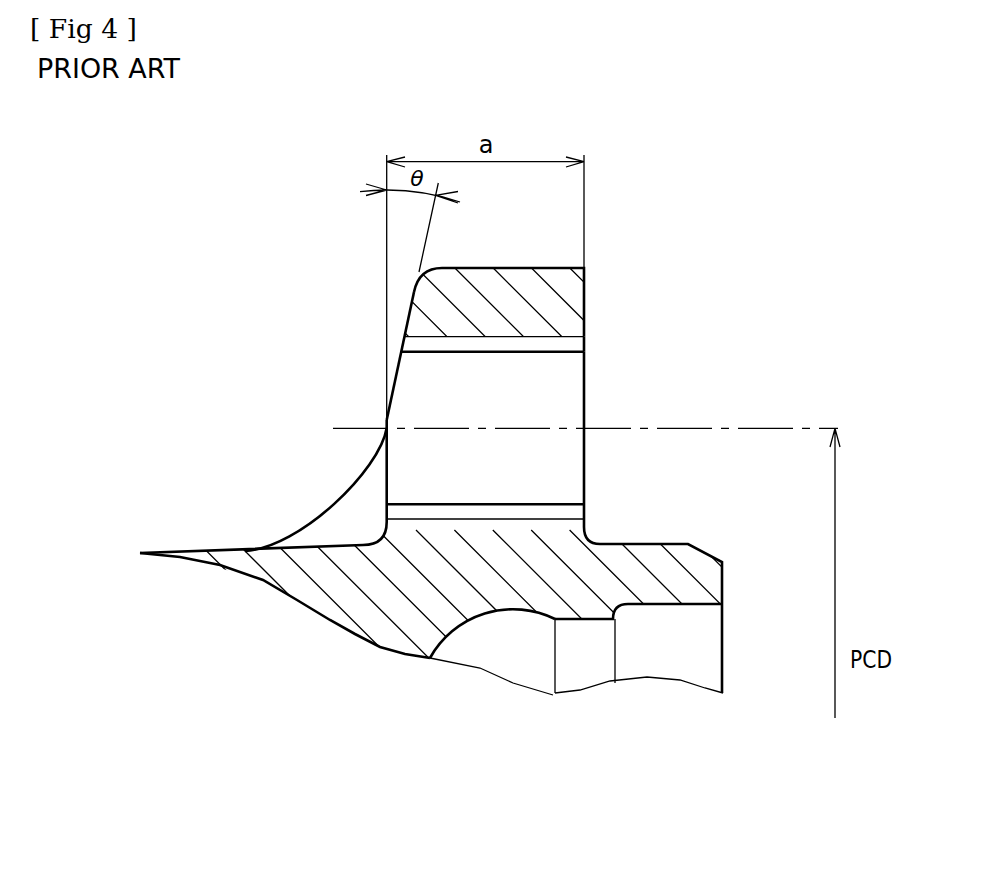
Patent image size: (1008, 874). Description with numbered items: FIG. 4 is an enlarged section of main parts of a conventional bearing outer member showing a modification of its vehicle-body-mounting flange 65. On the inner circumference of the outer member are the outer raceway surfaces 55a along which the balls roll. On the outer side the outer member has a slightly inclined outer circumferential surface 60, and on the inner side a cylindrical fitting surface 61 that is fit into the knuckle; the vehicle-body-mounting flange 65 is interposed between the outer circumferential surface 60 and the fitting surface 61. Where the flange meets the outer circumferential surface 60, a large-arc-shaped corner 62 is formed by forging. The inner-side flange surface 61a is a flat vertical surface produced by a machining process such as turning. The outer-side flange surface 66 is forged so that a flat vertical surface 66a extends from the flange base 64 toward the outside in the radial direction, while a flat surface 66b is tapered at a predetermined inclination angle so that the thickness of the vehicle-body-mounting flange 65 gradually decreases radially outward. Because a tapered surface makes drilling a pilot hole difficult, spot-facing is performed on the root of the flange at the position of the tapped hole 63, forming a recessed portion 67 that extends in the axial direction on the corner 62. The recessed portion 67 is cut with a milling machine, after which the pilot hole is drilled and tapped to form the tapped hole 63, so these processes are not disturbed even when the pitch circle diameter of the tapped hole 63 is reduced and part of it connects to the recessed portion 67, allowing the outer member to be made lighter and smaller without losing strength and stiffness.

The outer circumferential surface 60 is at (200, 552).
The fitting surface 61 is at (638, 543).
The inner-side flange surface 61a is at (585, 438).
The corner 62 is at (337, 507).
The tapped hole 63 is at (552, 347).
The flange base 64 is at (386, 428).
The vehicle-body-mounting flange 65 is at (568, 297).
The outer-side flange surface 66 is at (332, 326).
The flat vertical surface 66a is at (386, 403).
The flat surface 66b is at (407, 302).
The recessed portion 67 is at (358, 520).
The outer raceway surface 55a is at (513, 610).